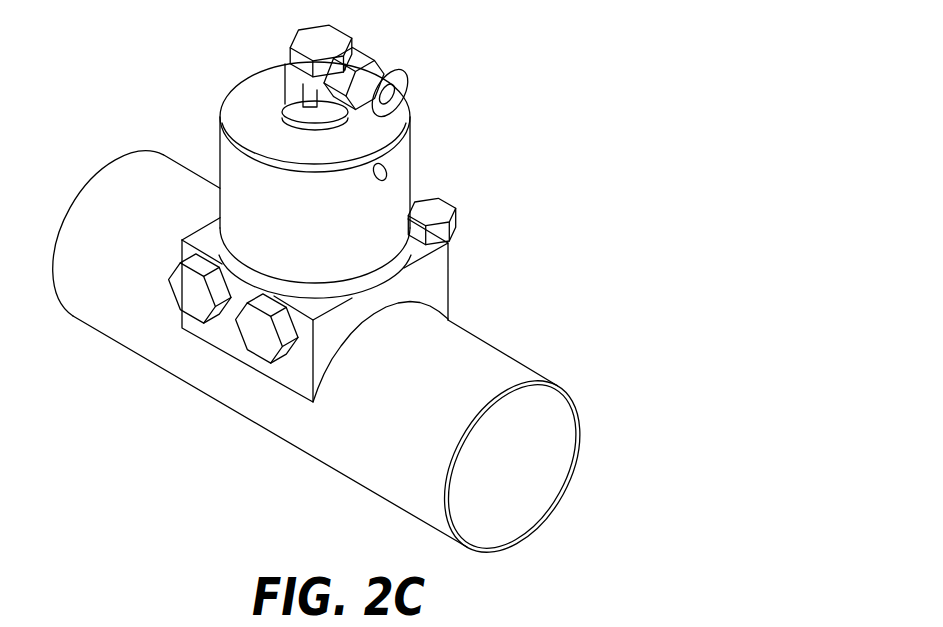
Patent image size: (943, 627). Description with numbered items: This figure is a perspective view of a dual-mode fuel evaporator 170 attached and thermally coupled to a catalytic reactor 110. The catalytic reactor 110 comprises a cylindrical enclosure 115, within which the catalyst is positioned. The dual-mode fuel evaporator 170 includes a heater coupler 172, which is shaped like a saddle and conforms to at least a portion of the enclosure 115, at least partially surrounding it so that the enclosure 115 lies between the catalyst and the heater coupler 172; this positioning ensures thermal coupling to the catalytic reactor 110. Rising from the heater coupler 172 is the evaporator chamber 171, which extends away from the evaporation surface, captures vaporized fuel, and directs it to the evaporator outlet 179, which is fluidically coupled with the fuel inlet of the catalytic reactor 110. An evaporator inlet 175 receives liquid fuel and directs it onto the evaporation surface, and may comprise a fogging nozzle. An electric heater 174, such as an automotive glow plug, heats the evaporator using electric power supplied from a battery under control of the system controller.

The catalytic reactor 110 is at (341, 363).
The cylindrical enclosure 115 is at (571, 461).
The dual-mode fuel evaporator 170 is at (314, 214).
The evaporator chamber 171 is at (233, 150).
The heater coupler 172 is at (427, 278).
The electric heater 174 is at (262, 330).
The evaporator inlet 175 is at (405, 85).
The evaporator outlet 179 is at (389, 170).